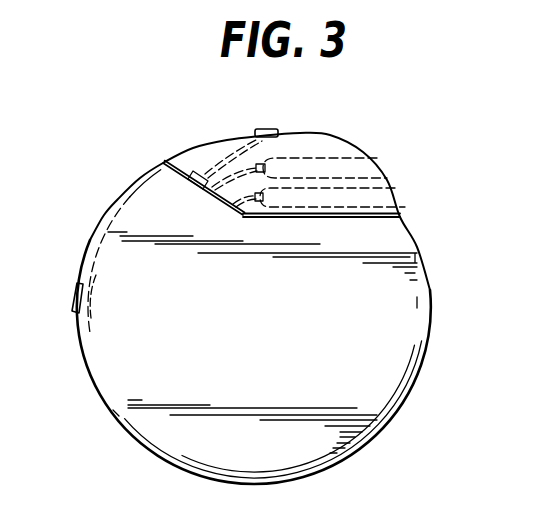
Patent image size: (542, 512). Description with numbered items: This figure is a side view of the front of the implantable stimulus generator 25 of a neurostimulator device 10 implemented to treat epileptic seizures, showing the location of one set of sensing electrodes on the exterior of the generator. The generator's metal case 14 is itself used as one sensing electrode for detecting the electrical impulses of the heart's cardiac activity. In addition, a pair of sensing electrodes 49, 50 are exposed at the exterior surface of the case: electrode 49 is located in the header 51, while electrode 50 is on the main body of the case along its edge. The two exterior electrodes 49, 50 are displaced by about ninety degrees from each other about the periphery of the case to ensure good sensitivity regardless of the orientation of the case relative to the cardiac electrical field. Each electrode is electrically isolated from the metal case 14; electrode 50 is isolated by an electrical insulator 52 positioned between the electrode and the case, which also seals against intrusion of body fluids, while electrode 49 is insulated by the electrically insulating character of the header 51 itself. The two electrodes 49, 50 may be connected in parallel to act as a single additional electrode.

The neurostimulator device 10 is at (462, 240).
The metal case 14 is at (274, 308).
The implantable stimulus generator 25 is at (162, 431).
The sensing electrode 49 is at (257, 130).
The sensing electrode 50 is at (74, 291).
The header 51 is at (364, 151).
The electrical insulator 52 is at (77, 313).